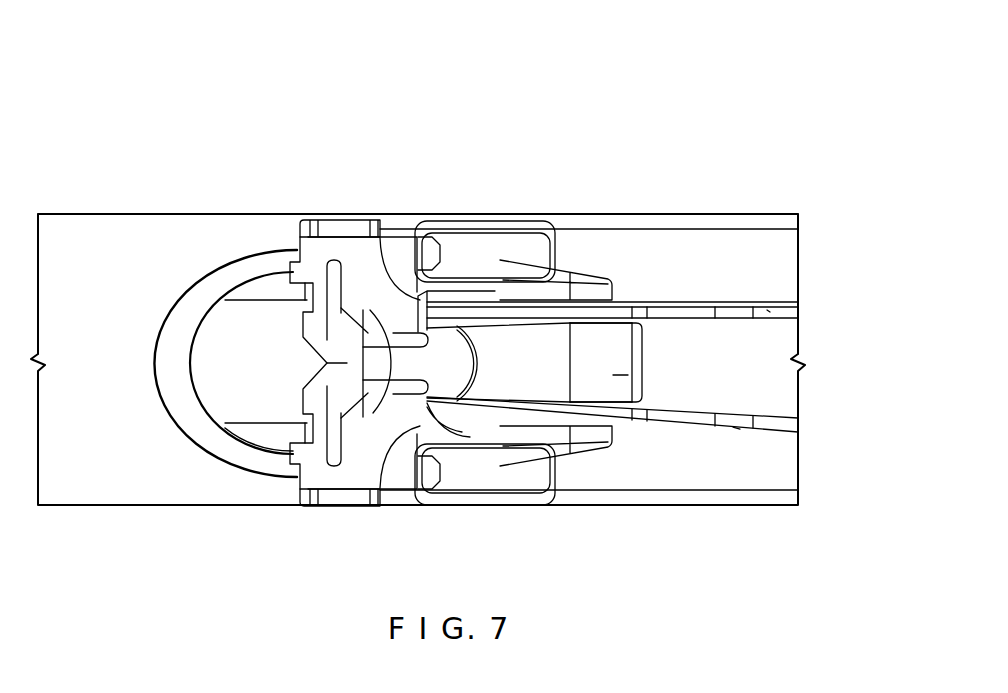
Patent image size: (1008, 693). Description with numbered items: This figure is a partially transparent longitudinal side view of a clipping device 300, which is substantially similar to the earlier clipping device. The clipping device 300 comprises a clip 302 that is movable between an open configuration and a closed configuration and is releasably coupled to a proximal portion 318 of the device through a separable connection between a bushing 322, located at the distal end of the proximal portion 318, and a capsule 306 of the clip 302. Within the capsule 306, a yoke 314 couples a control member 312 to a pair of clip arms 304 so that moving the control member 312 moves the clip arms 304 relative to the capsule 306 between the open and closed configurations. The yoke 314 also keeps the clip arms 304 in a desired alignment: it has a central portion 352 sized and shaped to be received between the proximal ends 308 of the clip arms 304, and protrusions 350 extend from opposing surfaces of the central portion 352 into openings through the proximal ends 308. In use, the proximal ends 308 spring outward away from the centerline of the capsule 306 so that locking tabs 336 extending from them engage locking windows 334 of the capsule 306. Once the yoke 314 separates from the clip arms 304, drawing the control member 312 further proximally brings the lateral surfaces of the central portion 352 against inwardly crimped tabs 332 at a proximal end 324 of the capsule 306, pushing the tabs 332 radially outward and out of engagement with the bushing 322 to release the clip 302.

The clipping device 300 is at (330, 128).
The clip 302 is at (705, 167).
The clip arms 304 is at (733, 427).
The capsule 306 is at (740, 215).
The proximal ends 308 is at (592, 305).
The control member 312 is at (225, 348).
The yoke 314 is at (560, 360).
The proximal portion 318 is at (101, 177).
The bushing 322 is at (148, 243).
The proximal end 324 is at (393, 225).
The inwardly crimped tabs 332 is at (347, 362).
The locking windows 334 is at (447, 248).
The locking tabs 336 is at (492, 298).
The protrusions 350 is at (580, 285).
The central portion 352 is at (613, 375).